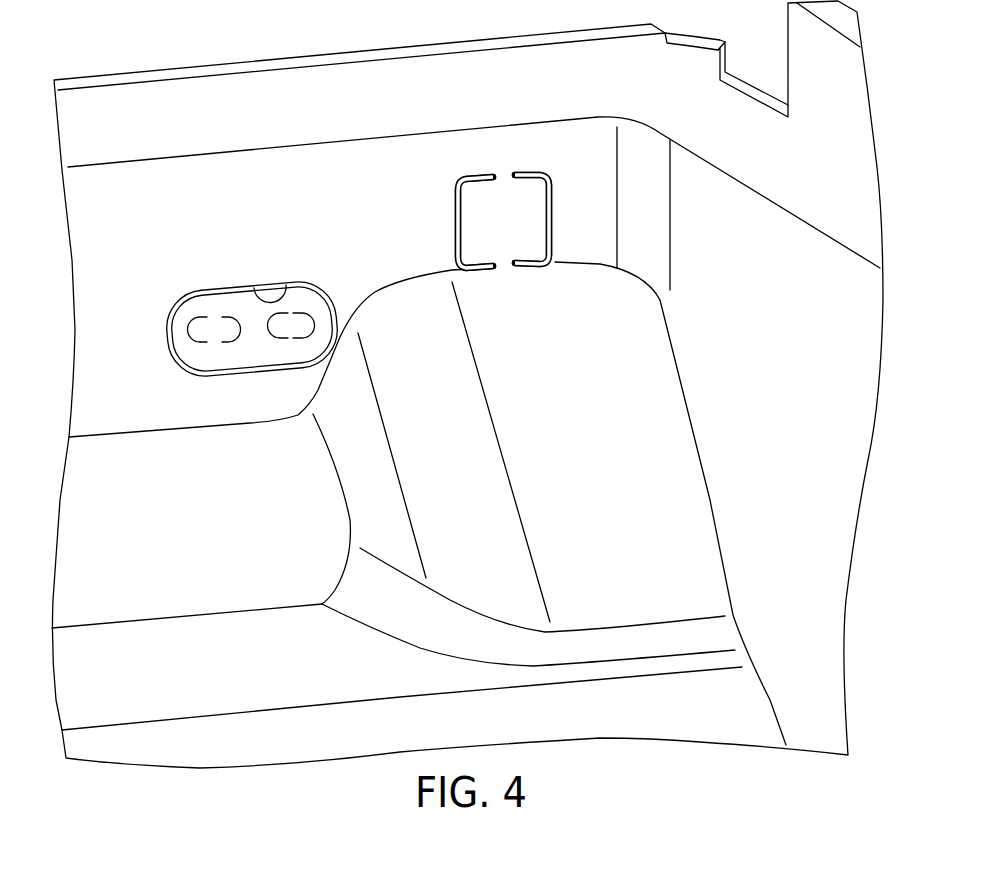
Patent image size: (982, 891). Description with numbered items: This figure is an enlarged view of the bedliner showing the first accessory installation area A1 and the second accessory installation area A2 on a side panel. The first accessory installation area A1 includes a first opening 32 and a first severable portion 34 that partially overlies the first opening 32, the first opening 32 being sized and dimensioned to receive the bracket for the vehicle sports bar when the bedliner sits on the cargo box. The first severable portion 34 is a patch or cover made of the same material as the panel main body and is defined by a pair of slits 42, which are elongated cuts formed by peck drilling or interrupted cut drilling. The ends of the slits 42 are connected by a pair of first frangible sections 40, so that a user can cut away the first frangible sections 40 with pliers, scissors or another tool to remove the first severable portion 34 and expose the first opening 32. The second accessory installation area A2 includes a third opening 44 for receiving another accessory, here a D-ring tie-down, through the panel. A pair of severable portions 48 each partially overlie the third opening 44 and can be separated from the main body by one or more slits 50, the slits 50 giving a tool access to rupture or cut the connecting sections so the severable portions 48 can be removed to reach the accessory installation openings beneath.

The first opening 32 is at (446, 172).
The first severable portion 34 is at (508, 221).
The first frangible section 40 is at (505, 175).
The slits 42 is at (455, 215).
The third opening 44 is at (292, 290).
The severable portions 48 is at (205, 330).
The slits 50 is at (192, 345).
The first accessory installation area A1 is at (548, 286).
The second accessory installation area A2 is at (270, 389).